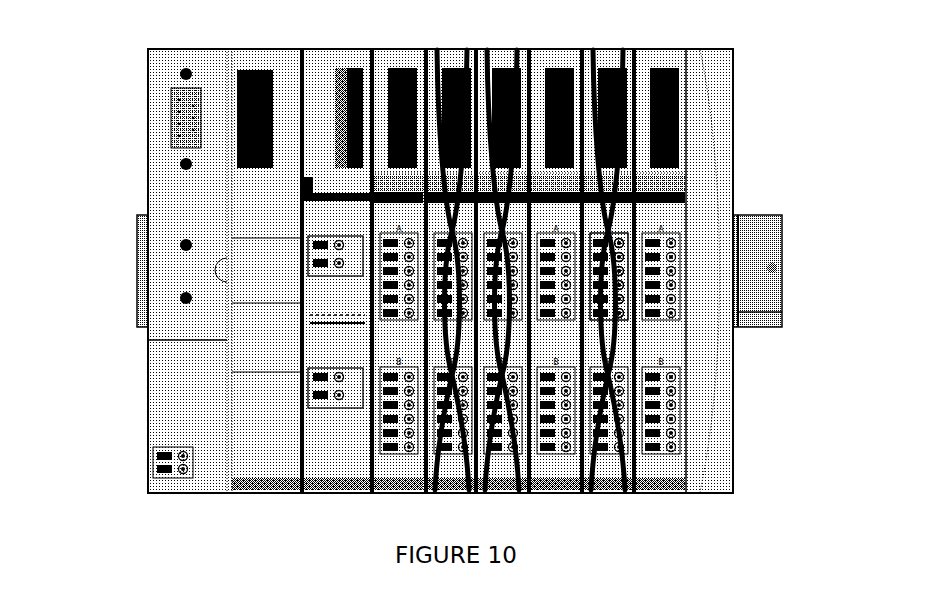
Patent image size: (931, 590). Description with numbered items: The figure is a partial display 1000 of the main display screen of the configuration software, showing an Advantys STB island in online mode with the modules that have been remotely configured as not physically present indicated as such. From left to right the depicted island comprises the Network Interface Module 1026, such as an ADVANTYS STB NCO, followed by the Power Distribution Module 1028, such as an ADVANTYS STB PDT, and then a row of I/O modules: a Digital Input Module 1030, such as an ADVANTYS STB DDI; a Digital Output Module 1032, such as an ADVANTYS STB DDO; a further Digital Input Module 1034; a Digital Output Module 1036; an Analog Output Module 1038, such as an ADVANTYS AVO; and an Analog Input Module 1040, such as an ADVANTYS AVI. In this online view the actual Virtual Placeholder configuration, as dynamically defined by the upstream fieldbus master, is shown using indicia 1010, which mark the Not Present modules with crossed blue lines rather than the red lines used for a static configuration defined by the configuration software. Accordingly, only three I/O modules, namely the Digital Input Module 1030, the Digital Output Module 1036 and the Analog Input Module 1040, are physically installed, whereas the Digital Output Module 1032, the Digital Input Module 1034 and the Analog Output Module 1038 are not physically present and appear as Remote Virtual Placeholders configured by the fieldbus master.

The partial display 1000 is at (443, 269).
The indicia 1010 is at (610, 265).
The Network Interface Module 1026 is at (263, 195).
The Power Distribution Module 1028 is at (315, 83).
The Digital Input Module 1030 is at (388, 62).
The Digital Output Module 1032 is at (447, 62).
The Digital Input Module 1034 is at (502, 460).
The Digital Output Module 1036 is at (560, 463).
The Analog Output Module 1038 is at (700, 270).
The Analog Input Module 1040 is at (665, 342).